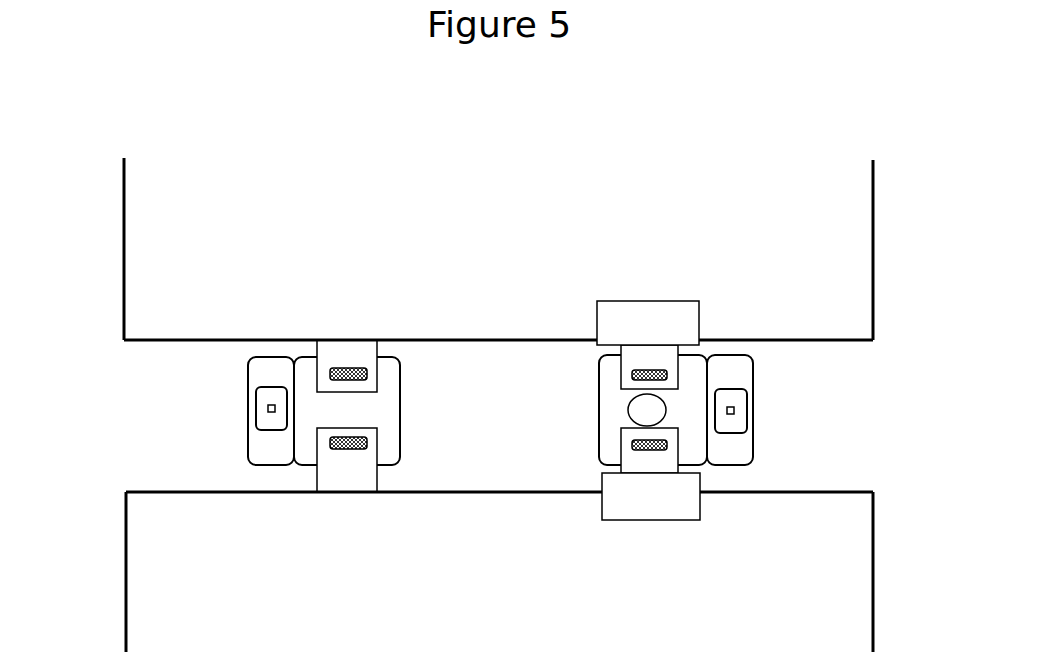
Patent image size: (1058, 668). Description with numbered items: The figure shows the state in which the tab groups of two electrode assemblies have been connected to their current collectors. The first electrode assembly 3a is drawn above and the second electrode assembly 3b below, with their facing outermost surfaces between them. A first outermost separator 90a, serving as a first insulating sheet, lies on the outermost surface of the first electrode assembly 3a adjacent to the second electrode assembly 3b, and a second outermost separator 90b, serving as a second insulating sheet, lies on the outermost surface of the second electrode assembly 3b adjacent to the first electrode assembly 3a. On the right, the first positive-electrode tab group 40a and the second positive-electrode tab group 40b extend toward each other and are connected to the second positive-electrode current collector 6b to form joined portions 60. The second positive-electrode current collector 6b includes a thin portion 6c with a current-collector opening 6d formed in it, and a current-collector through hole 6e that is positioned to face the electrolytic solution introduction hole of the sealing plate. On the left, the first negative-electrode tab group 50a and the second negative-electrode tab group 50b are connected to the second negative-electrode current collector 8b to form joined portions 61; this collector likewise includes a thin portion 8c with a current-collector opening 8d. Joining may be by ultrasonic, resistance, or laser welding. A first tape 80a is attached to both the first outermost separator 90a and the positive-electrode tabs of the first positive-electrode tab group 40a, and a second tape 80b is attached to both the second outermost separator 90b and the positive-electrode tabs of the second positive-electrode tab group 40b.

The first electrode assembly 3a is at (505, 249).
The second electrode assembly 3b is at (506, 572).
The first outermost separator 90a is at (173, 293).
The second outermost separator 90b is at (168, 598).
The second negative-electrode current collector 8b is at (232, 419).
The thin portion 8c is at (268, 423).
The current-collector opening 8d is at (268, 408).
The second positive-electrode current collector 6b is at (773, 414).
The thin portion 6c is at (737, 430).
The current-collector opening 6d is at (736, 408).
The current-collector through hole 6e is at (630, 408).
The first negative-electrode tab group 50a is at (347, 363).
The second negative-electrode tab group 50b is at (353, 463).
The first positive-electrode tab group 40a is at (641, 357).
The second positive-electrode tab group 40b is at (642, 463).
The joined portions 60 is at (634, 372).
The joined portions 61 is at (367, 371).
The first tape 80a is at (668, 323).
The second tape 80b is at (680, 500).